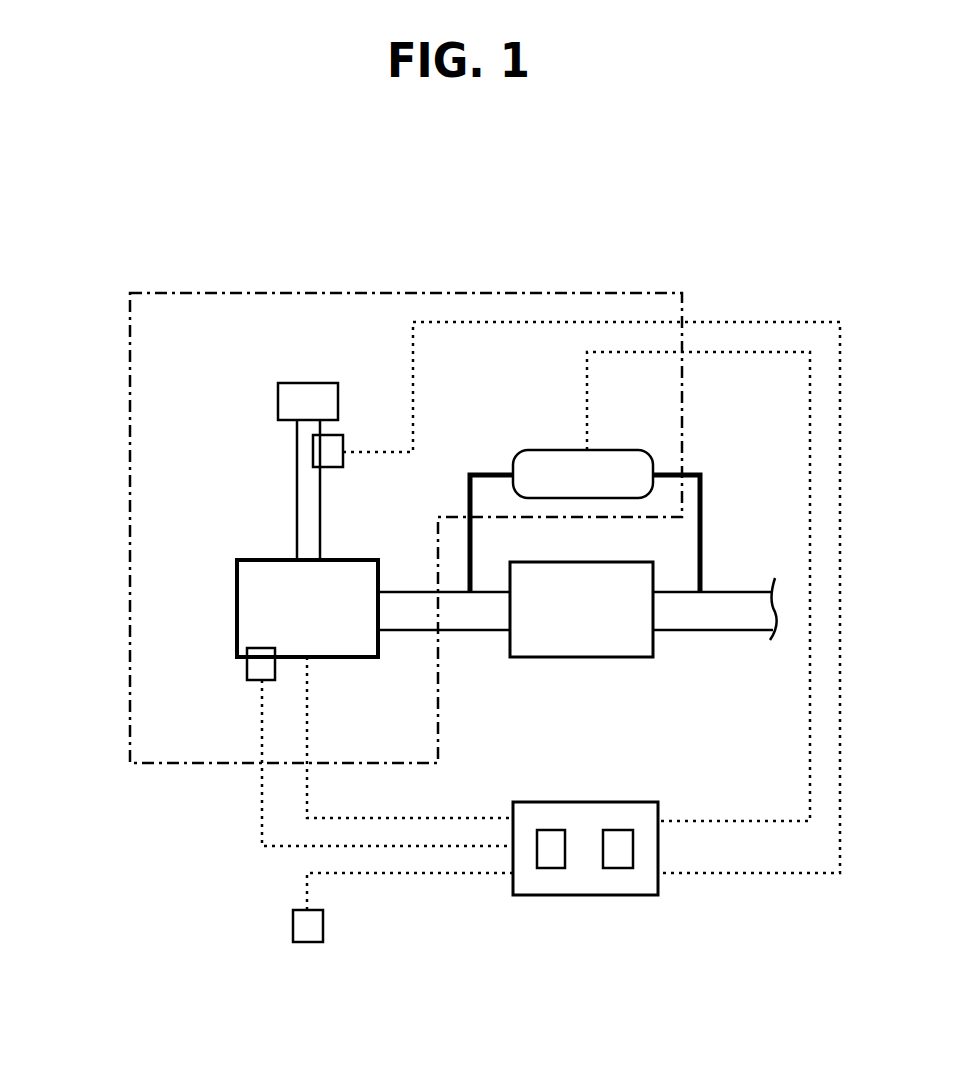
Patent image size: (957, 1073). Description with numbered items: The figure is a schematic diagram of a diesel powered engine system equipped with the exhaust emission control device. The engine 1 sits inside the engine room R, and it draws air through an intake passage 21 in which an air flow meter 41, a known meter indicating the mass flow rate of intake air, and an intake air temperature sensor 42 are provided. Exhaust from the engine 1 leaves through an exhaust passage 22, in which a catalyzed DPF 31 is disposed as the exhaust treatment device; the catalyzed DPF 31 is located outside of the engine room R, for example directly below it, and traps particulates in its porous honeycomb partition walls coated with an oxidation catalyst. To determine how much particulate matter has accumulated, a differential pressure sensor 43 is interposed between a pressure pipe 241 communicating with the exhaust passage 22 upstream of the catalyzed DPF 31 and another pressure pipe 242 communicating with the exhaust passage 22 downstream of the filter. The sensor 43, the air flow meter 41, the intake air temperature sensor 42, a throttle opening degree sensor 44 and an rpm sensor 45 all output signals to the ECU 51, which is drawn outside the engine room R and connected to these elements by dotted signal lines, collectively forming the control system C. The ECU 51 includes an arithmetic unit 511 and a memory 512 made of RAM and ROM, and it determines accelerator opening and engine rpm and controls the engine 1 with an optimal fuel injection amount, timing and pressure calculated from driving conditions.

The engine 1 is at (237, 583).
The intake passage 21 is at (297, 478).
The exhaust passage 22 is at (480, 632).
The catalyzed DPF 31 is at (583, 657).
The air flow meter 41 is at (278, 402).
The intake air temperature sensor 42 is at (340, 435).
The differential pressure sensor 43 is at (617, 450).
The throttle opening degree sensor 44 is at (293, 930).
The rpm sensor 45 is at (245, 673).
The ECU 51 is at (610, 891).
The arithmetic unit 511 is at (550, 868).
The memory 512 is at (622, 868).
The pressure pipe 241 is at (497, 473).
The pressure pipe 242 is at (702, 505).
The engine room R is at (130, 317).
The control system C is at (778, 908).